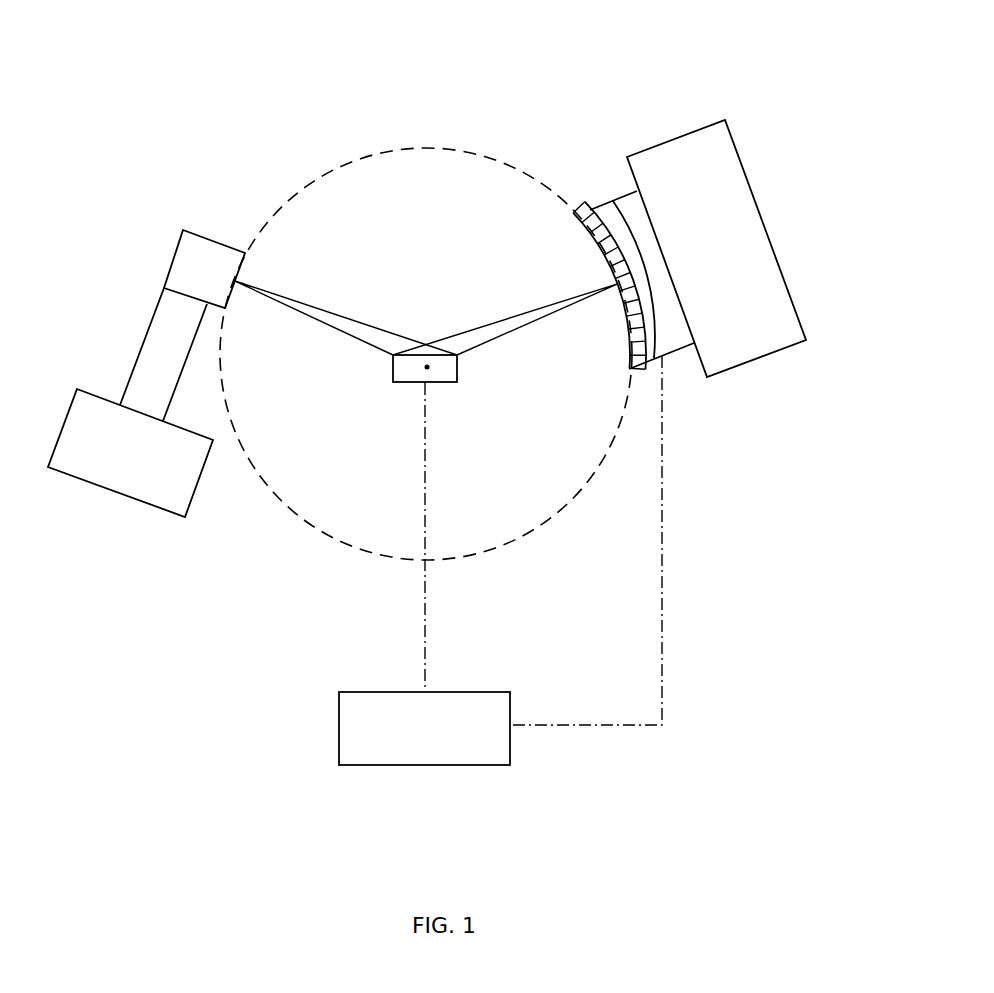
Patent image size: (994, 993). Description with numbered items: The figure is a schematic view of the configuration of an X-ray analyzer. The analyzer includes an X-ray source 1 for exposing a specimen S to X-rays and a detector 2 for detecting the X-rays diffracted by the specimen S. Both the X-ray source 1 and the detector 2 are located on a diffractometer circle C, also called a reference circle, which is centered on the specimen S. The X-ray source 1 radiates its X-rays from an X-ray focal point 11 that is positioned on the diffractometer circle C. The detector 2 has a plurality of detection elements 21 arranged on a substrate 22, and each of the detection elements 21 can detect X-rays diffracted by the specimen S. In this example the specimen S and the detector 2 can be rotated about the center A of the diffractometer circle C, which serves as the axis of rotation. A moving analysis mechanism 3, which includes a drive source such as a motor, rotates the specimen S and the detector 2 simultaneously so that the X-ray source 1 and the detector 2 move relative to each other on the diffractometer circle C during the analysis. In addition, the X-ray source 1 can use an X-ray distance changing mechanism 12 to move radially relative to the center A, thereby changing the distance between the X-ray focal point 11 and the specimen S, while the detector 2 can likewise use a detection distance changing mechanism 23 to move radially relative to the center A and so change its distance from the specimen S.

The X-ray source 1 is at (211, 238).
The X-ray focal point 11 is at (270, 270).
The X-ray distance changing mechanism 12 is at (115, 493).
The detector 2 is at (677, 352).
The detection elements 21 is at (583, 213).
The substrate 22 is at (597, 220).
The detection distance changing mechanism 23 is at (757, 208).
The moving analysis mechanism 3 is at (410, 765).
The center of the diffractometer circle A is at (427, 367).
The specimen S is at (448, 382).
The diffractometer circle C is at (368, 157).